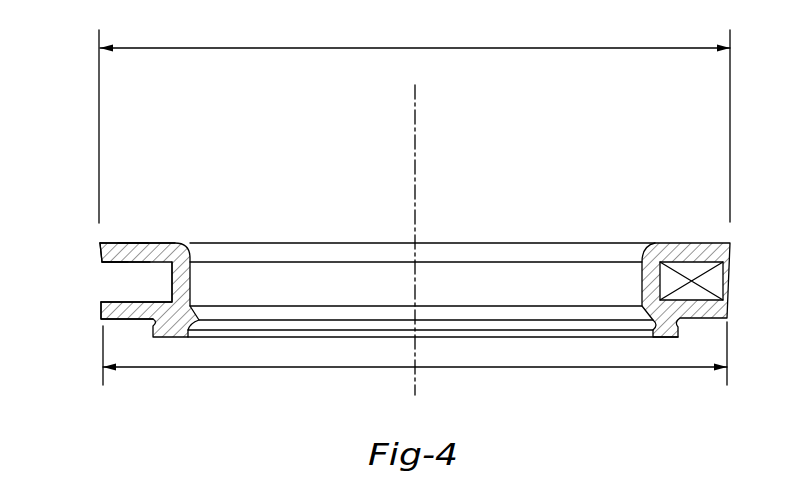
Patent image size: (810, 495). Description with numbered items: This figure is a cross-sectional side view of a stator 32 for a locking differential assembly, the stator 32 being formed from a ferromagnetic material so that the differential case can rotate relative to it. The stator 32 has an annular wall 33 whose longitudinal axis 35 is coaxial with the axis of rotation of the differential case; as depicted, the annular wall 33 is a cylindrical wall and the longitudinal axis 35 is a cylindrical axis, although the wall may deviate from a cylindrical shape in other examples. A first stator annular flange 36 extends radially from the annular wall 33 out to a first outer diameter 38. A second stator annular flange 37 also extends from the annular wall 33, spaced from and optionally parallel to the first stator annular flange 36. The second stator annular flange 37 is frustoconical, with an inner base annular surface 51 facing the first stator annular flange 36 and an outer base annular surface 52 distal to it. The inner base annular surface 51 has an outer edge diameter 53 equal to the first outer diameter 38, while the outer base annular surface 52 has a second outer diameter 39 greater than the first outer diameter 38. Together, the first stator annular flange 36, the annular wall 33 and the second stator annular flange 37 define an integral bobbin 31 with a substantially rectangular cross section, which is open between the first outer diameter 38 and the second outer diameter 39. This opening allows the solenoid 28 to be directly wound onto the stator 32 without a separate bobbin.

The solenoid 28 is at (712, 283).
The integral bobbin 31 is at (127, 287).
The stator 32 is at (469, 226).
The annular wall 33 is at (180, 282).
The longitudinal axis 35 is at (415, 137).
The first stator annular flange 36 is at (110, 313).
The second stator annular flange 37 is at (153, 243).
The first outer diameter 38 is at (252, 367).
The second outer diameter 39 is at (250, 48).
The inner base annular surface 51 is at (102, 268).
The outer base annular surface 52 is at (132, 243).
The outer edge diameter 53 is at (122, 262).